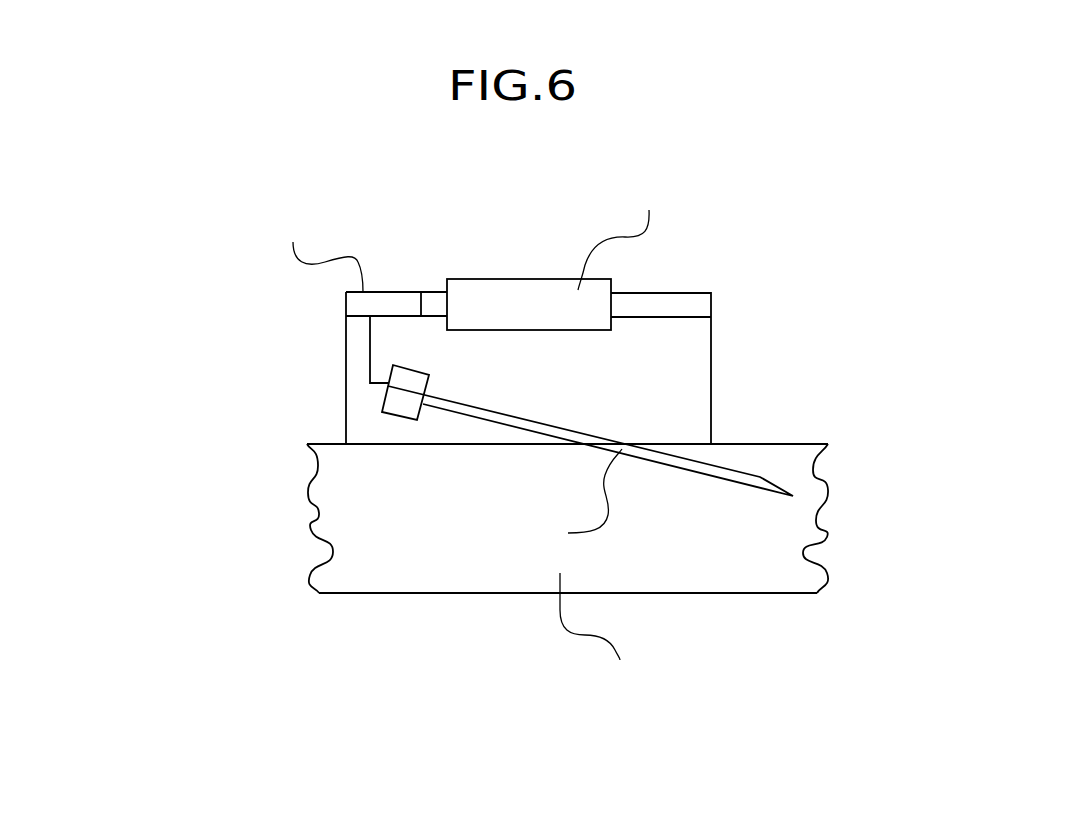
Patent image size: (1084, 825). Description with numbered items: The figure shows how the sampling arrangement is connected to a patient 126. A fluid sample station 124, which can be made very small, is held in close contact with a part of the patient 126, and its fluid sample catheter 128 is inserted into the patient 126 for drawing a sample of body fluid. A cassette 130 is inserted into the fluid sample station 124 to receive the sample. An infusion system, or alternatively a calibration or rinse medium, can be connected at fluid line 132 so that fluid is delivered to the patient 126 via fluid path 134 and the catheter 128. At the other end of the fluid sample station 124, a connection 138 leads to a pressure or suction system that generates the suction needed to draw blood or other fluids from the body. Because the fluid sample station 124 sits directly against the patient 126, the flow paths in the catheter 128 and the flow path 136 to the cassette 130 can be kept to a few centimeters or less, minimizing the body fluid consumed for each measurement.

The fluid sample station 124 is at (400, 292).
The patient 126 is at (385, 582).
The fluid sample catheter 128 is at (657, 463).
The cassette 130 is at (543, 279).
The fluid line 132 is at (346, 316).
The fluid path 134 is at (370, 348).
The flow path 136 is at (421, 292).
The connection 138 is at (711, 317).